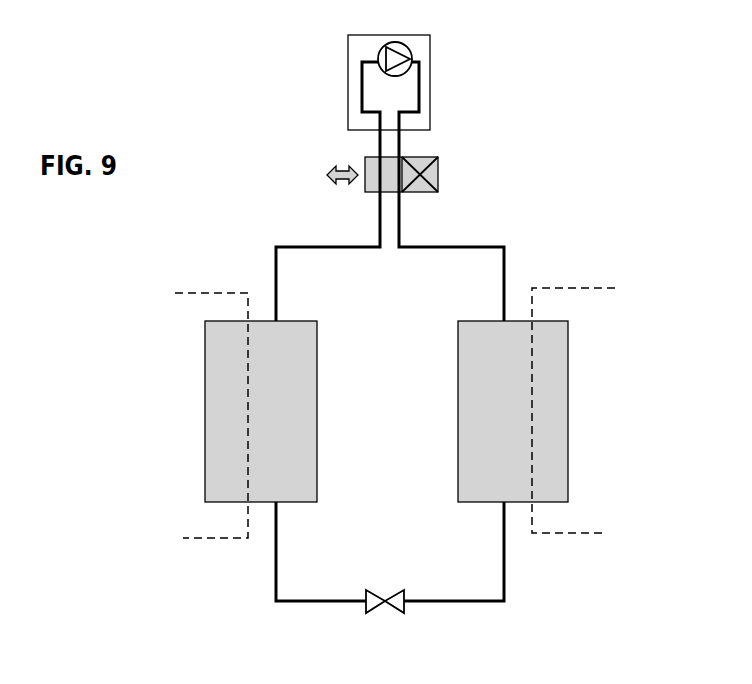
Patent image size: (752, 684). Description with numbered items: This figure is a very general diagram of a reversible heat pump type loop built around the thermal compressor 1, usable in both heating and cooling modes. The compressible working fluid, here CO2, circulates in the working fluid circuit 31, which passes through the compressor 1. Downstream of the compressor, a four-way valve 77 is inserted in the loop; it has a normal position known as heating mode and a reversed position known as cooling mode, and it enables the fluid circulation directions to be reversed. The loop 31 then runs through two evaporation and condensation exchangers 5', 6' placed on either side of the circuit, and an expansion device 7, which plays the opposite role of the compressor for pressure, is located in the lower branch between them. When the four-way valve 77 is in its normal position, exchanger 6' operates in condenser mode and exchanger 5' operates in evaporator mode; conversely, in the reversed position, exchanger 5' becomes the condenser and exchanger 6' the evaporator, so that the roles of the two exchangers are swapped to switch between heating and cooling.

The thermal compressor 1 is at (340, 64).
The four-way valve 77 is at (440, 168).
The working fluid circuit 31 is at (504, 273).
The exchanger 5' is at (235, 415).
The exchanger 6' is at (540, 410).
The expansion device 7 is at (388, 586).